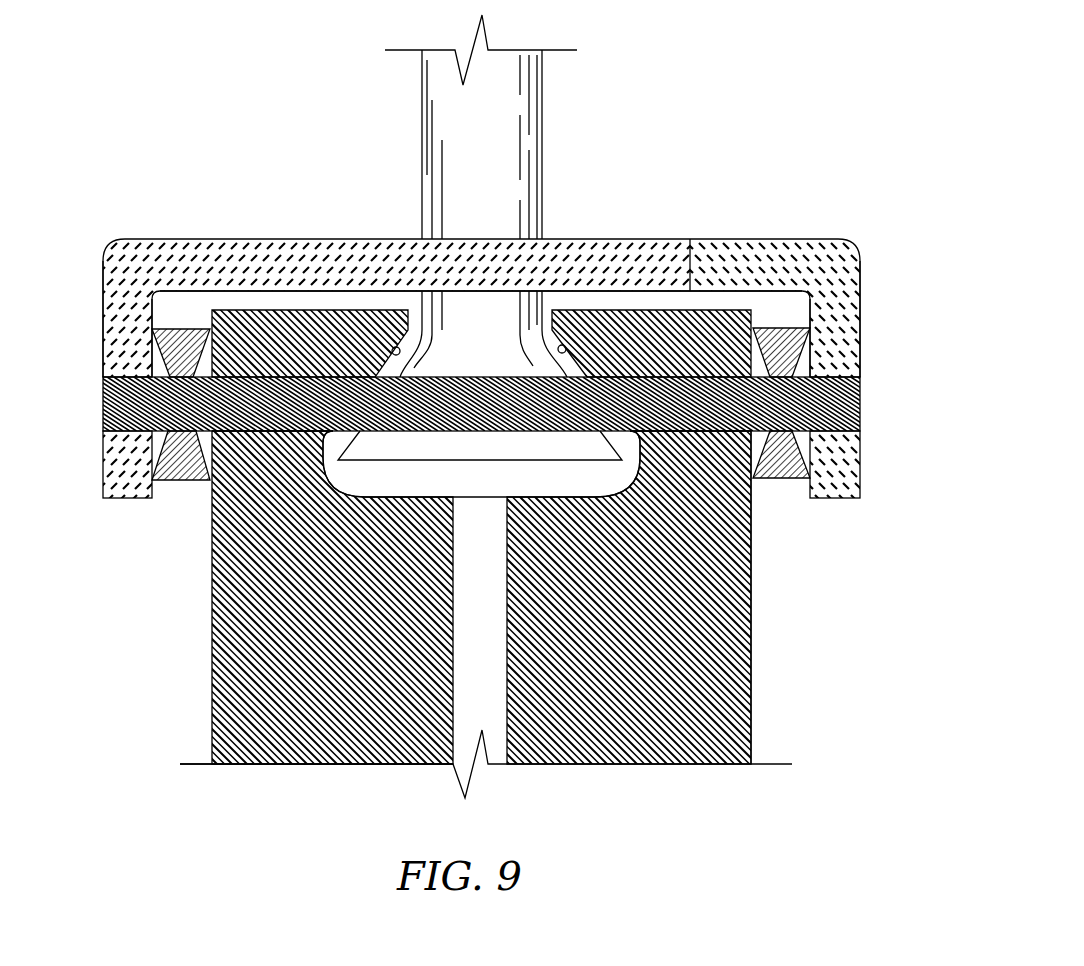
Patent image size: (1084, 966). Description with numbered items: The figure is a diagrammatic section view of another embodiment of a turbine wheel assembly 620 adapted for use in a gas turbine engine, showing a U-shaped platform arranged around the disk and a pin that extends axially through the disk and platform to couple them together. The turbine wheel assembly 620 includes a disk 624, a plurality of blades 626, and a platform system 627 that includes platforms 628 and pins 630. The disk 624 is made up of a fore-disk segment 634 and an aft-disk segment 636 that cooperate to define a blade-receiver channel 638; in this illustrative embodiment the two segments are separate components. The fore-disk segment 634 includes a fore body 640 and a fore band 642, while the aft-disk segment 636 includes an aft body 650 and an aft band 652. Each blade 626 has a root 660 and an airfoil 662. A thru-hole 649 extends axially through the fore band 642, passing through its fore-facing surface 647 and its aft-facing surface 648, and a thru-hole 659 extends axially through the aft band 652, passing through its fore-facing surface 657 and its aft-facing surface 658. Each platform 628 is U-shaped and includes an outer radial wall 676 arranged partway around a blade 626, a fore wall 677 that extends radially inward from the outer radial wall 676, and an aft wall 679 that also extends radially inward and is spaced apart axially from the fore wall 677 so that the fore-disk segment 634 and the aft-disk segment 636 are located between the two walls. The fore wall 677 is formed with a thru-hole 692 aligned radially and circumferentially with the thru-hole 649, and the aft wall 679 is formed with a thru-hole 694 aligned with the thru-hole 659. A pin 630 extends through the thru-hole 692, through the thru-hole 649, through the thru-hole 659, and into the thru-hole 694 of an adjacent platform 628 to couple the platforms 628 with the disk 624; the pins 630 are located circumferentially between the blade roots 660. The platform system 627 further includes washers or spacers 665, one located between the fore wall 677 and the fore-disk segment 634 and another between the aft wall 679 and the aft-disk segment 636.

The turbine wheel assembly 620 is at (748, 88).
The disk 624 is at (766, 758).
The blade 626 is at (546, 94).
The platform system 627 is at (108, 240).
The platform 628 is at (157, 240).
The pin 630 is at (86, 405).
The fore-disk segment 634 is at (196, 748).
The aft-disk segment 636 is at (766, 742).
The blade-receiver channel 638 is at (500, 475).
The fore body 640 is at (208, 662).
The fore band 642 is at (268, 305).
The fore-facing surface 647 is at (208, 323).
The aft-facing surface 648 is at (395, 350).
The thru-hole 649 is at (245, 432).
The aft body 650 is at (762, 693).
The aft band 652 is at (617, 305).
The fore-facing surface 657 is at (560, 347).
The aft-facing surface 658 is at (755, 323).
The thru-hole 659 is at (683, 432).
The root 660 is at (541, 465).
The airfoil 662 is at (536, 118).
The spacer 665 is at (178, 485).
The outer radial wall 676 is at (380, 238).
The fore wall 677 is at (88, 330).
The aft wall 679 is at (866, 351).
The thru-hole 692 is at (128, 432).
The thru-hole 694 is at (840, 440).